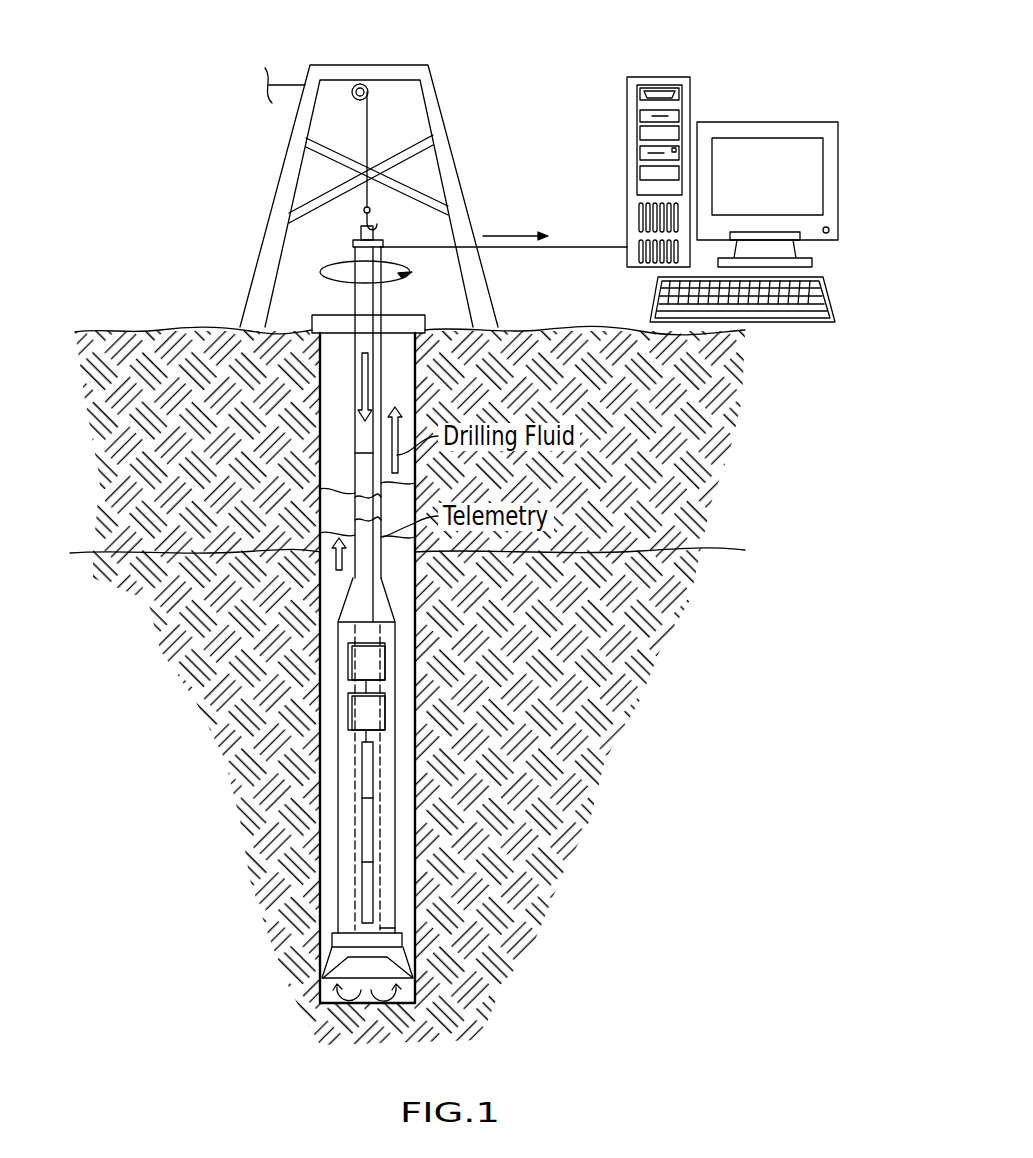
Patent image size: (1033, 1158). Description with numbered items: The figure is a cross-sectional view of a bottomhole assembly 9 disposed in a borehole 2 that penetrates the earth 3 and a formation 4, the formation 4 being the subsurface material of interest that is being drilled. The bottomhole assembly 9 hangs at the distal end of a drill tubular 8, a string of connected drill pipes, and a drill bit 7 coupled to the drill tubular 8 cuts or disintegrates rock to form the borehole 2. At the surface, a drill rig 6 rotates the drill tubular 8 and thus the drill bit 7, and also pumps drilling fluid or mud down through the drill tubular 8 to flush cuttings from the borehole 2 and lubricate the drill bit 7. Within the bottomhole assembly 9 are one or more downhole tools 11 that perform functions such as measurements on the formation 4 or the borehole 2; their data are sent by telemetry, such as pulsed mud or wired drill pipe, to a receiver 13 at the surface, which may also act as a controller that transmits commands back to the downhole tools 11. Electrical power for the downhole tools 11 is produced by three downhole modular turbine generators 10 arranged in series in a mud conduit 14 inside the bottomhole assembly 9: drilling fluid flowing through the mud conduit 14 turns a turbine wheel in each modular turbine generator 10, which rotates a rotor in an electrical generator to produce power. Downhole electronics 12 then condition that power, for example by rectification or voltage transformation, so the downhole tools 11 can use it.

The borehole 2 is at (333, 459).
The earth 3 is at (195, 373).
The formation 4 is at (226, 600).
The drill rig 6 is at (243, 270).
The drill bit 7 is at (337, 960).
The drill tubular 8 is at (353, 428).
The bottomhole assembly 9 is at (342, 760).
The downhole modular turbine generator 10 is at (368, 770).
The downhole tool 11 is at (373, 658).
The downhole electronics 12 is at (373, 715).
The receiver 13 is at (682, 40).
The mud conduit 14 is at (380, 928).